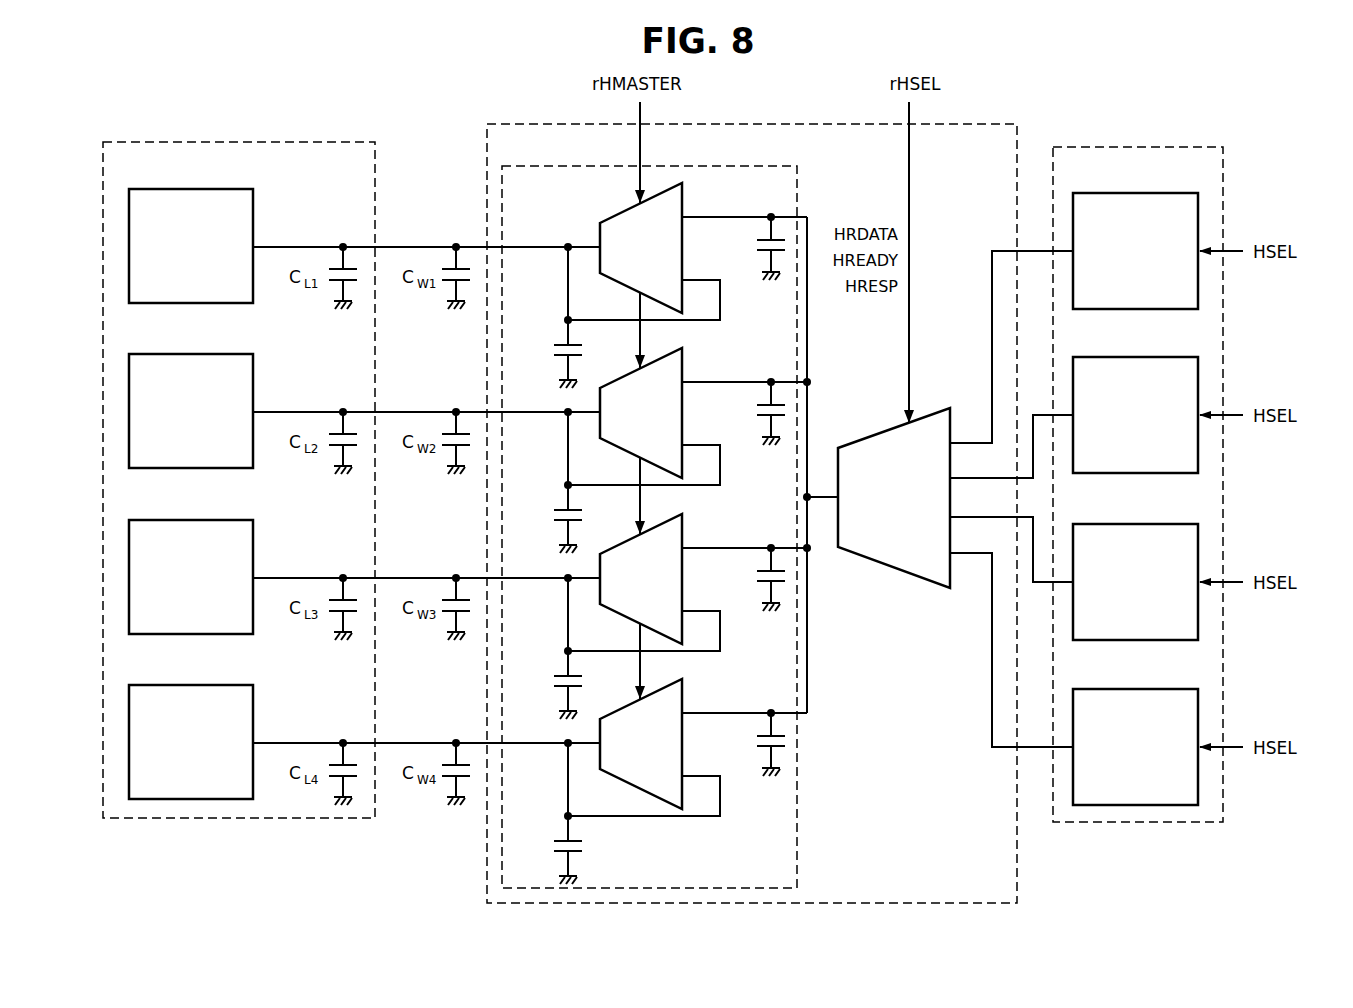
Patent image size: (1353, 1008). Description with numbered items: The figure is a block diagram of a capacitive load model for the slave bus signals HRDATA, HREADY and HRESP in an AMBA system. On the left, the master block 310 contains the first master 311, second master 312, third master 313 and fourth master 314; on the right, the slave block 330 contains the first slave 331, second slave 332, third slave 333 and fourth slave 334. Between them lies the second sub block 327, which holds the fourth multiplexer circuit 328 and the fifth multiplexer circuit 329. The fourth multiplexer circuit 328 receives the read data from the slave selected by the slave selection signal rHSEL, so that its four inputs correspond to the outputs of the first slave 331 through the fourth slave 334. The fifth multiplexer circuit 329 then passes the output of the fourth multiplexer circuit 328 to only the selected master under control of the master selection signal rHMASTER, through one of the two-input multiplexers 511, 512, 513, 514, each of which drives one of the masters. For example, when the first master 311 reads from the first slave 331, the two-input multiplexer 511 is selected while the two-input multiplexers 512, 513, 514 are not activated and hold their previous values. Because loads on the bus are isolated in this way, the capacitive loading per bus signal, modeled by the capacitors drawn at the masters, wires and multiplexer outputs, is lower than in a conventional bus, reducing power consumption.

The master block 310 is at (200, 142).
The first master 311 is at (195, 188).
The second master 312 is at (195, 353).
The third master 313 is at (195, 519).
The fourth master 314 is at (195, 684).
The second sub block 327 is at (715, 124).
The fourth multiplexer circuit 328 is at (884, 440).
The fifth multiplexer circuit 329 is at (718, 166).
The slave block 330 is at (1143, 147).
The first slave 331 is at (1138, 192).
The second slave 332 is at (1138, 356).
The third slave 333 is at (1138, 523).
The fourth slave 334 is at (1138, 688).
The two-input multiplexer 511 is at (685, 198).
The two-input multiplexer 512 is at (685, 363).
The two-input multiplexer 513 is at (685, 529).
The two-input multiplexer 514 is at (685, 694).